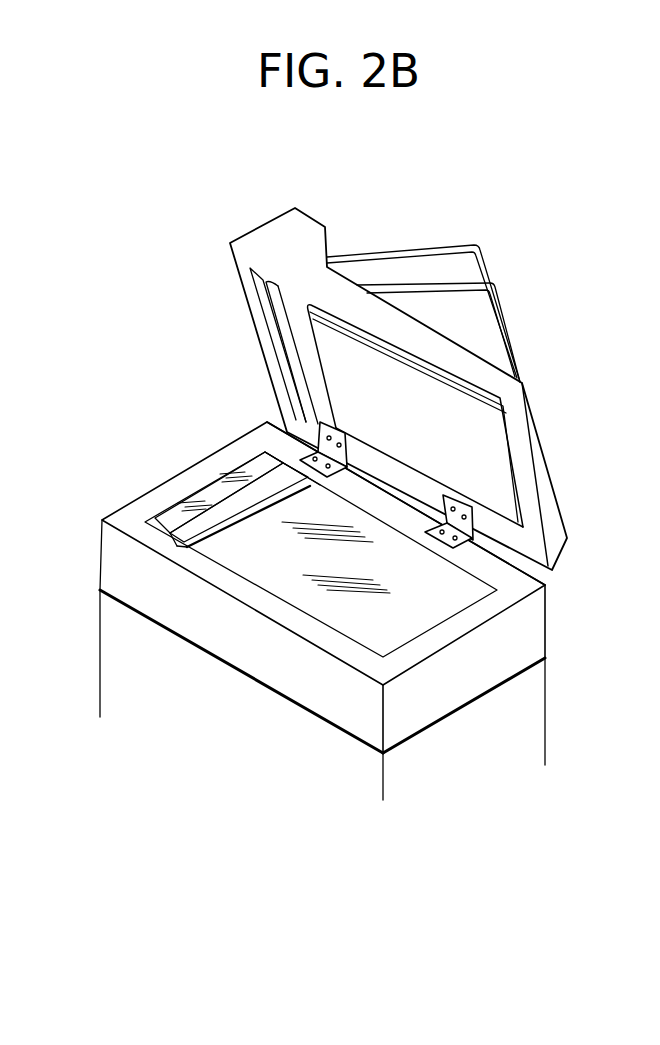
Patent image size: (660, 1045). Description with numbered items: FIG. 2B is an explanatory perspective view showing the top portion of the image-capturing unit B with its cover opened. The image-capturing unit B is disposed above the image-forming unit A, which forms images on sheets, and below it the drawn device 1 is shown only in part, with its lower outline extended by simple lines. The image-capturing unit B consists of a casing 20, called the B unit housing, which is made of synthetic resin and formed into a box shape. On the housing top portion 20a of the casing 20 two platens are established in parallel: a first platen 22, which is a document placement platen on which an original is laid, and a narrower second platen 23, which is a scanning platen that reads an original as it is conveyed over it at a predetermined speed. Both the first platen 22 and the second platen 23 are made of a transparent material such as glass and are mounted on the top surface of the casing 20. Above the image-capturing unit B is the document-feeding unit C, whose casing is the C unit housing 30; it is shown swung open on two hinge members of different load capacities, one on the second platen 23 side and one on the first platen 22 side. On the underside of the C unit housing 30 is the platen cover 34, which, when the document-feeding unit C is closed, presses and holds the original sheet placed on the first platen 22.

The image reading apparatus 1 is at (117, 668).
The casing 20 is at (122, 570).
The housing top portion 20a is at (237, 450).
The first platen 22 is at (335, 622).
The second platen 23 is at (202, 502).
The C unit housing 30 is at (307, 228).
The platen cover 34 is at (470, 446).
The image-forming unit A is at (520, 727).
The image-capturing unit B is at (520, 640).
The document-feeding unit C is at (246, 236).